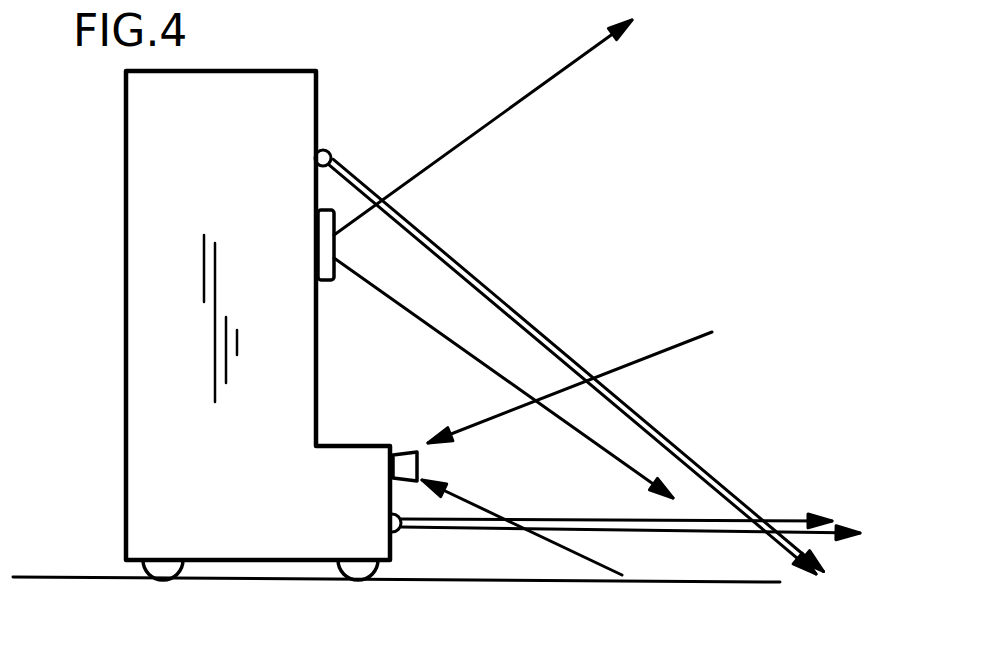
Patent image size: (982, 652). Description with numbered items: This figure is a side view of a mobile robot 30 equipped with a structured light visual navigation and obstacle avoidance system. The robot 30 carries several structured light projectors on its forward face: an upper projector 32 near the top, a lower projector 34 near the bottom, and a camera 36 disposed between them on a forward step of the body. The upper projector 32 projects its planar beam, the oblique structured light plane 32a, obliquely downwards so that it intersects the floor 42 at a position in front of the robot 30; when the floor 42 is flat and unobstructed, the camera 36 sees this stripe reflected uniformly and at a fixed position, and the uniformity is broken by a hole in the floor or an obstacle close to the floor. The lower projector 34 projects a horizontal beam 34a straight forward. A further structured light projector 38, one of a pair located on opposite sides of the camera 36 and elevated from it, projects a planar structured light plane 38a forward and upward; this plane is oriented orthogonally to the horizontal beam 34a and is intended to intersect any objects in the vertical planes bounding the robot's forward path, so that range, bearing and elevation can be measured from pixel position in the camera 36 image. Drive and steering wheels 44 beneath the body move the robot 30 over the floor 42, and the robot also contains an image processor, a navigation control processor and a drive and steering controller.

The robot 30 is at (126, 192).
The upper projector 32 is at (328, 150).
The oblique structured light plane 32a is at (527, 312).
The lower projector 34 is at (396, 536).
The horizontal beam 34a is at (652, 534).
The camera 36 is at (405, 452).
The structured light projector 38 is at (330, 282).
The structured light plane 38a is at (490, 118).
The floor 42 is at (36, 576).
The drive and steering wheels 44 is at (156, 580).